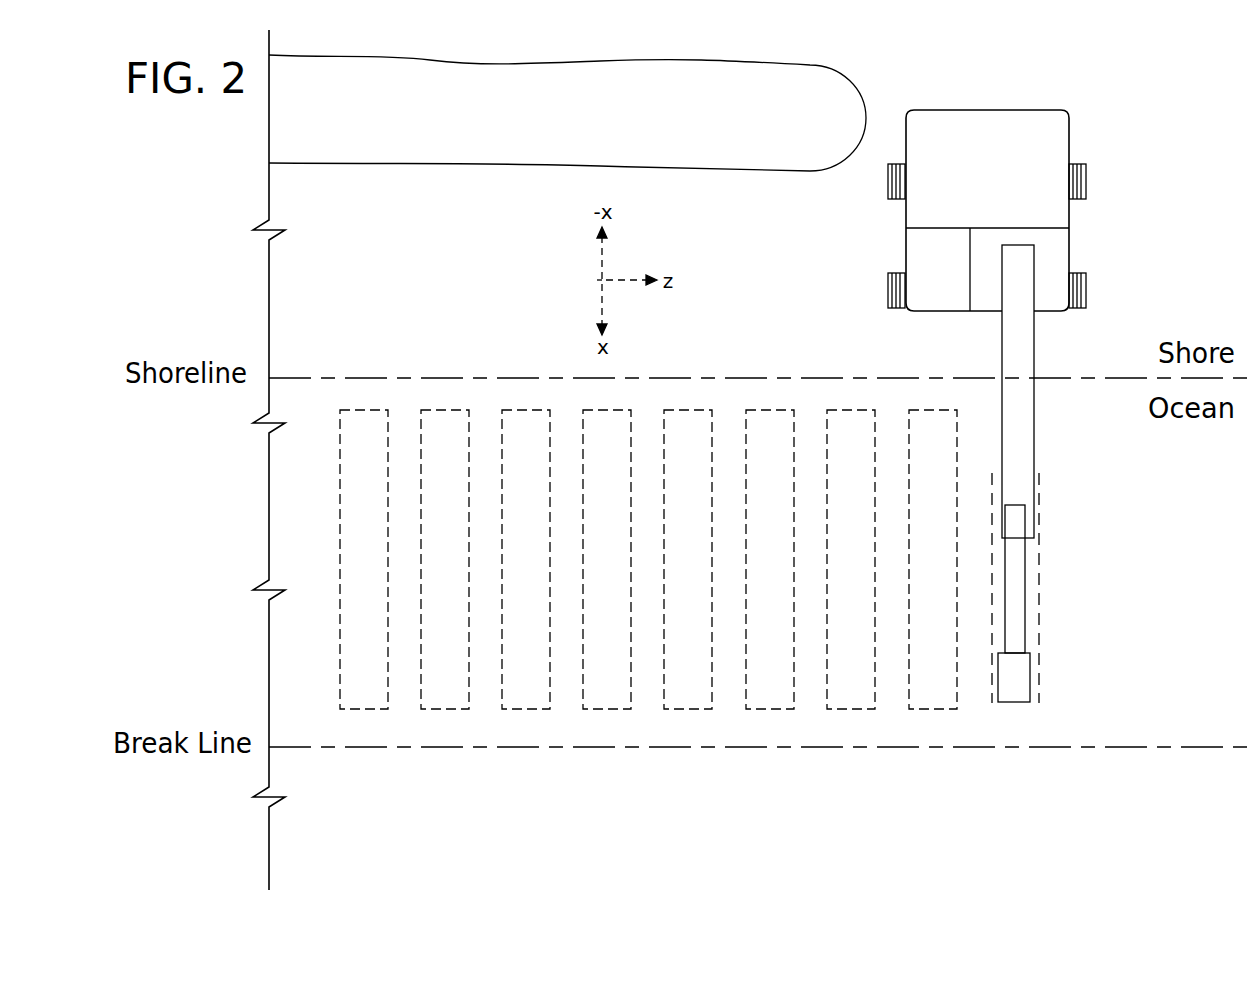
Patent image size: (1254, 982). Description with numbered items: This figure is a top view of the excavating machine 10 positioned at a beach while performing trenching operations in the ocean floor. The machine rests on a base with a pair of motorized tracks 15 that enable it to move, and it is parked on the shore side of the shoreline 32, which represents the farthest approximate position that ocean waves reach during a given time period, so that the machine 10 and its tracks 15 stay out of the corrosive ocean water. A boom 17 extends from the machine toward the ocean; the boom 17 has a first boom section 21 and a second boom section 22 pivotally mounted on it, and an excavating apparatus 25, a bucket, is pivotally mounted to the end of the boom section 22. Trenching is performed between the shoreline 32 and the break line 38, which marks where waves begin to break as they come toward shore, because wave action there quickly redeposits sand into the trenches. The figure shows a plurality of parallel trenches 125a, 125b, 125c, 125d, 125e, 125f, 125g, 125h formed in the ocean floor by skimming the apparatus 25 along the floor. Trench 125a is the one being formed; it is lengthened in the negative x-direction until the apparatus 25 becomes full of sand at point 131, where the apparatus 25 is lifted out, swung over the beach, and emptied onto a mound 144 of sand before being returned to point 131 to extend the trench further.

The excavating machine 10 is at (1024, 204).
The motorized tracks 15 is at (1086, 182).
The boom 17 is at (1033, 437).
The boom section 21 is at (1022, 480).
The boom section 22 is at (1015, 583).
The excavating apparatus 25 is at (1017, 675).
The shoreline 32 is at (320, 376).
The break line 38 is at (320, 750).
The point 131 is at (616, 601).
The mound 144 is at (404, 160).
The trench 125a is at (366, 709).
The trench 125b is at (447, 709).
The trench 125c is at (528, 709).
The trench 125d is at (609, 709).
The trench 125e is at (690, 709).
The trench 125f is at (772, 709).
The trench 125g is at (853, 709).
The trench 125h is at (935, 709).